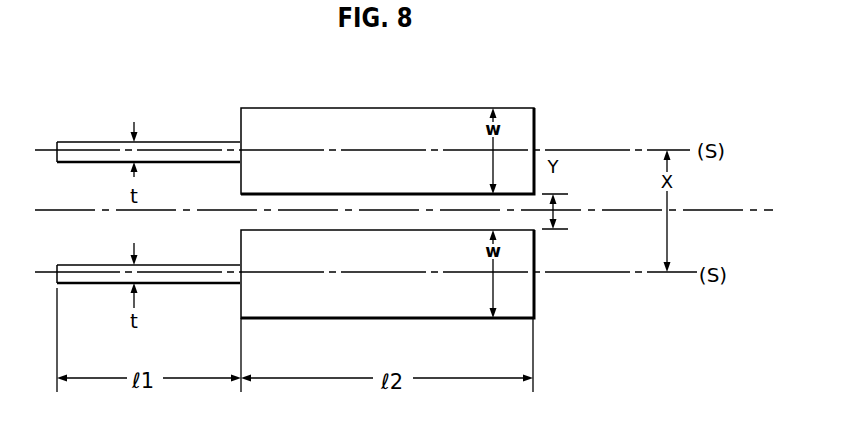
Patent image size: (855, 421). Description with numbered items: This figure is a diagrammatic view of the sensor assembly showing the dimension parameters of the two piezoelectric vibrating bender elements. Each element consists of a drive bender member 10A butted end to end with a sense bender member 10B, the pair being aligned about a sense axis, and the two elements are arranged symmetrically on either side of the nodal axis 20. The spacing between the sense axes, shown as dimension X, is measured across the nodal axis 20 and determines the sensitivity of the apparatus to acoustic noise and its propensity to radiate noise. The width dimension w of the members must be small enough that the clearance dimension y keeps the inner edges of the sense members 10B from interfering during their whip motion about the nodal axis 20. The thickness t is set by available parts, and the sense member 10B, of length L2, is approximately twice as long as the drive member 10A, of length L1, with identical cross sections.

The drive bender member 10A is at (81, 142).
The sense bender member 10B is at (268, 113).
The nodal axis 20 is at (743, 210).